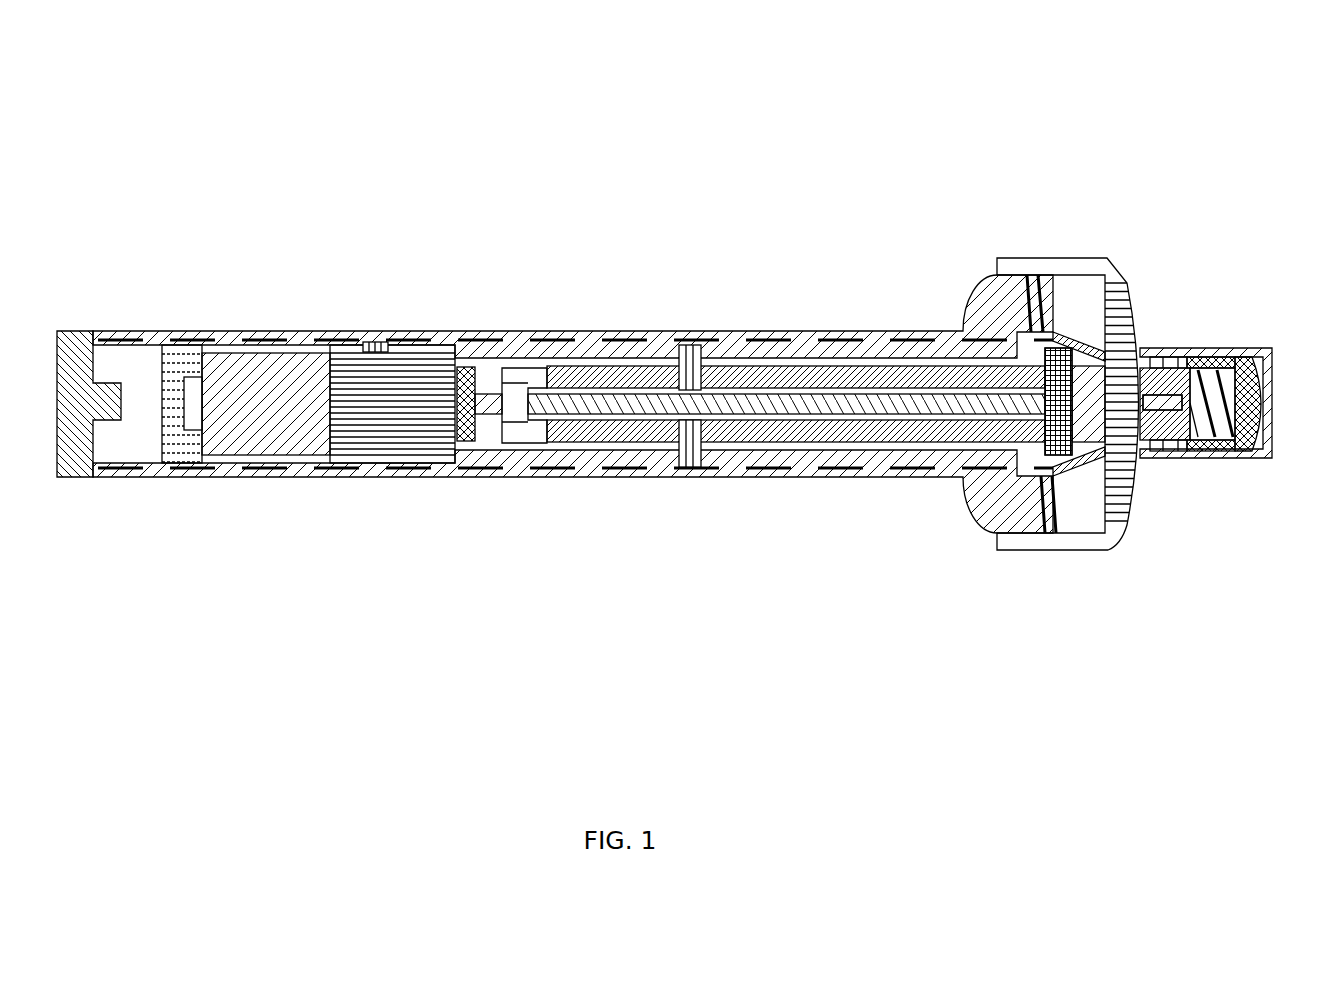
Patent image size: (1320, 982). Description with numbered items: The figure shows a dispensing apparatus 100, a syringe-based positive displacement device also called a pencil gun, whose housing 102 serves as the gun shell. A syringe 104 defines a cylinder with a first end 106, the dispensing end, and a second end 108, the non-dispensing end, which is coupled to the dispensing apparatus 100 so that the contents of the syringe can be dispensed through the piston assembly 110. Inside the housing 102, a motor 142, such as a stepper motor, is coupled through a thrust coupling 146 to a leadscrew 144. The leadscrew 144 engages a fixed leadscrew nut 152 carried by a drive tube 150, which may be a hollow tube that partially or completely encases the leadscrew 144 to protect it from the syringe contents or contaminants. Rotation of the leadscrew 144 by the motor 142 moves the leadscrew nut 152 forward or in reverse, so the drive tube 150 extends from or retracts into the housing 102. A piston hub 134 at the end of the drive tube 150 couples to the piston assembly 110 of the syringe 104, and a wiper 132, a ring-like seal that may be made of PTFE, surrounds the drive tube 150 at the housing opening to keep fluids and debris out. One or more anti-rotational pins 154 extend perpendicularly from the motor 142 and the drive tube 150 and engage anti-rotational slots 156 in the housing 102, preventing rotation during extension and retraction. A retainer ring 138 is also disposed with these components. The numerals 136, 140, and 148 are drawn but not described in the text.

The dispensing apparatus 100 is at (119, 109).
The housing 102 is at (907, 331).
The syringe 104 is at (1245, 345).
The first end 106 is at (1267, 472).
The second end 108 is at (1090, 474).
The piston assembly 110 is at (1205, 448).
The wiper 132 is at (1063, 350).
The piston hub 134 is at (1225, 347).
The seal ring 136 is at (465, 367).
The retainer ring 138 is at (1032, 258).
The end cap 140 is at (73, 329).
The motor 142 is at (258, 348).
The leadscrew 144 is at (410, 352).
The thrust coupling 146 is at (617, 392).
The contact 148 is at (173, 345).
The drive tube 150 is at (780, 365).
The leadscrew nut 152 is at (530, 366).
The anti-rotational pins 154 is at (383, 342).
The anti-rotational slots 156 is at (835, 340).